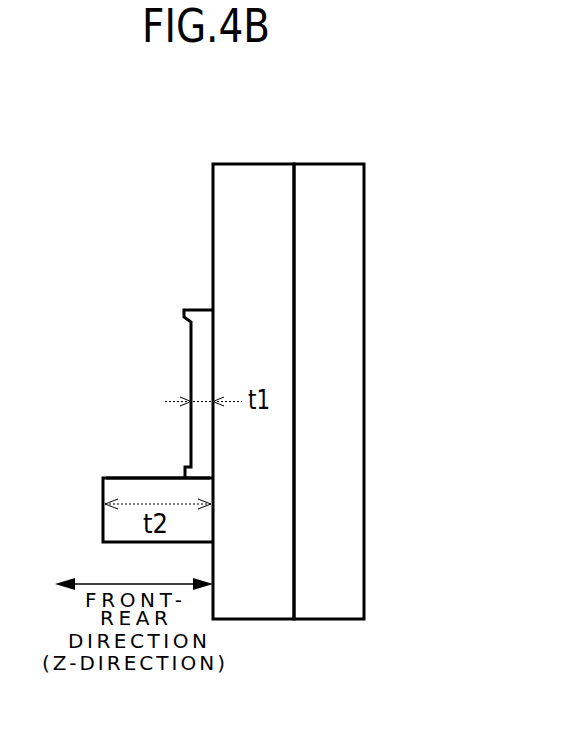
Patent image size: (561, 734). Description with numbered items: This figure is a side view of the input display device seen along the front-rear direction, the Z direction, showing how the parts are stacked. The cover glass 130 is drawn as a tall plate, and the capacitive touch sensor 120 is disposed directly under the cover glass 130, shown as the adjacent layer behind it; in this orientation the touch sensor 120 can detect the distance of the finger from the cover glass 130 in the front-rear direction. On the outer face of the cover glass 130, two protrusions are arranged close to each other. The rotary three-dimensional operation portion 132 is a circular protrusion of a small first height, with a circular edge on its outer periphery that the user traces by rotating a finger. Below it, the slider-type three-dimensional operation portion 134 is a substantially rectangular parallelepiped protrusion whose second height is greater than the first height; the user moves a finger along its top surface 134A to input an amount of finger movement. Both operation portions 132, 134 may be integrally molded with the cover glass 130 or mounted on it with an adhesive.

The cover glass 130 is at (252, 162).
The capacitive touch sensor 120 is at (330, 162).
The rotary three-dimensional operation portion 132 is at (189, 363).
The slider-type three-dimensional operation portion 134 is at (102, 517).
The top surface 134A is at (112, 476).